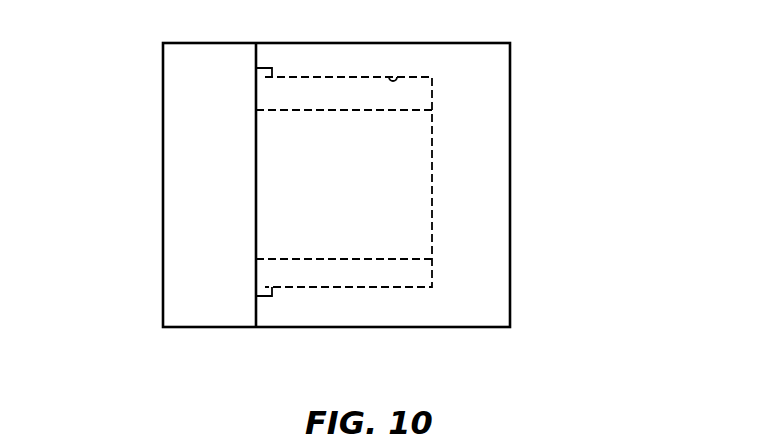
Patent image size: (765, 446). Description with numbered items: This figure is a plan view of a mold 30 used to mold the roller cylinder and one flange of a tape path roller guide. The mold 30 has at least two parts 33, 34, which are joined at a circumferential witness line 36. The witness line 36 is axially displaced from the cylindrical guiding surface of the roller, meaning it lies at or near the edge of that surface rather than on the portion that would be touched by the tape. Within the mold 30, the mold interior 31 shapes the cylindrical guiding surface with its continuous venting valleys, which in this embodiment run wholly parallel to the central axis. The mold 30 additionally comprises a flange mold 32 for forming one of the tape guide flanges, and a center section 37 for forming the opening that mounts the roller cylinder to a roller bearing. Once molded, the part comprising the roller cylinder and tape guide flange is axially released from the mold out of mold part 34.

The mold 30 is at (561, 91).
The mold interior 31 is at (393, 77).
The flange mold 32 is at (268, 293).
The mold part 33 is at (163, 80).
The mold part 34 is at (510, 177).
The circumferential witness line 36 is at (256, 57).
The center section 37 is at (392, 259).